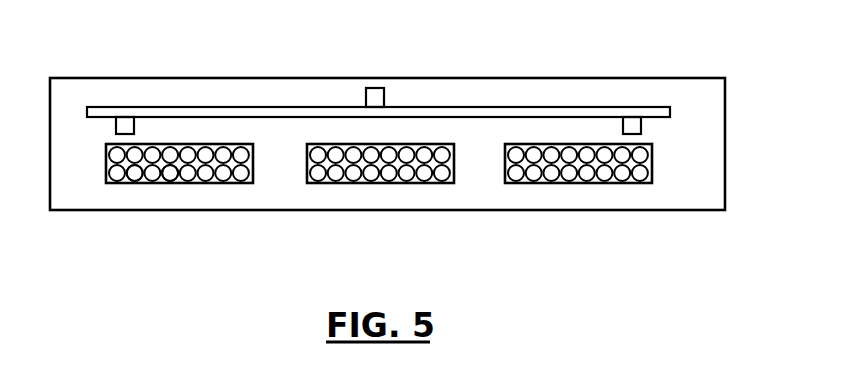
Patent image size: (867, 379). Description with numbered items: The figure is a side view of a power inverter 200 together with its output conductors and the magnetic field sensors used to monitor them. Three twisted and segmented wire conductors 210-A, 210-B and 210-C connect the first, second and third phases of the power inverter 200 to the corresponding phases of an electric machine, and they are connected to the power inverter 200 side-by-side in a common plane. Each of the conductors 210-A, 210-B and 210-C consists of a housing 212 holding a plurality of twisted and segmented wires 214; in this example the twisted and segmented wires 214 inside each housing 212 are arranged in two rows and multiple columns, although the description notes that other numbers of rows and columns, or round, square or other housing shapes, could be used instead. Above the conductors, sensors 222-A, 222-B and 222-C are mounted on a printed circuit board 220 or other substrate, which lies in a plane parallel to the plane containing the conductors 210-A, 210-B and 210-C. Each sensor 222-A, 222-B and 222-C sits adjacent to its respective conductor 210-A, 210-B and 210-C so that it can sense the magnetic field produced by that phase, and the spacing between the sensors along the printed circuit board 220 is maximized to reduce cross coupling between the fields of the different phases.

The power inverter 200 is at (608, 78).
The printed circuit board 220 is at (193, 107).
The sensor 222-A is at (123, 117).
The sensor 222-B is at (380, 88).
The sensor 222-C is at (641, 129).
The twisted and segmented wire conductor 210-A is at (242, 183).
The twisted and segmented wire conductor 210-B is at (370, 183).
The twisted and segmented wire conductor 210-C is at (566, 183).
The housing 212 is at (135, 183).
The twisted and segmented wires 214 is at (168, 183).